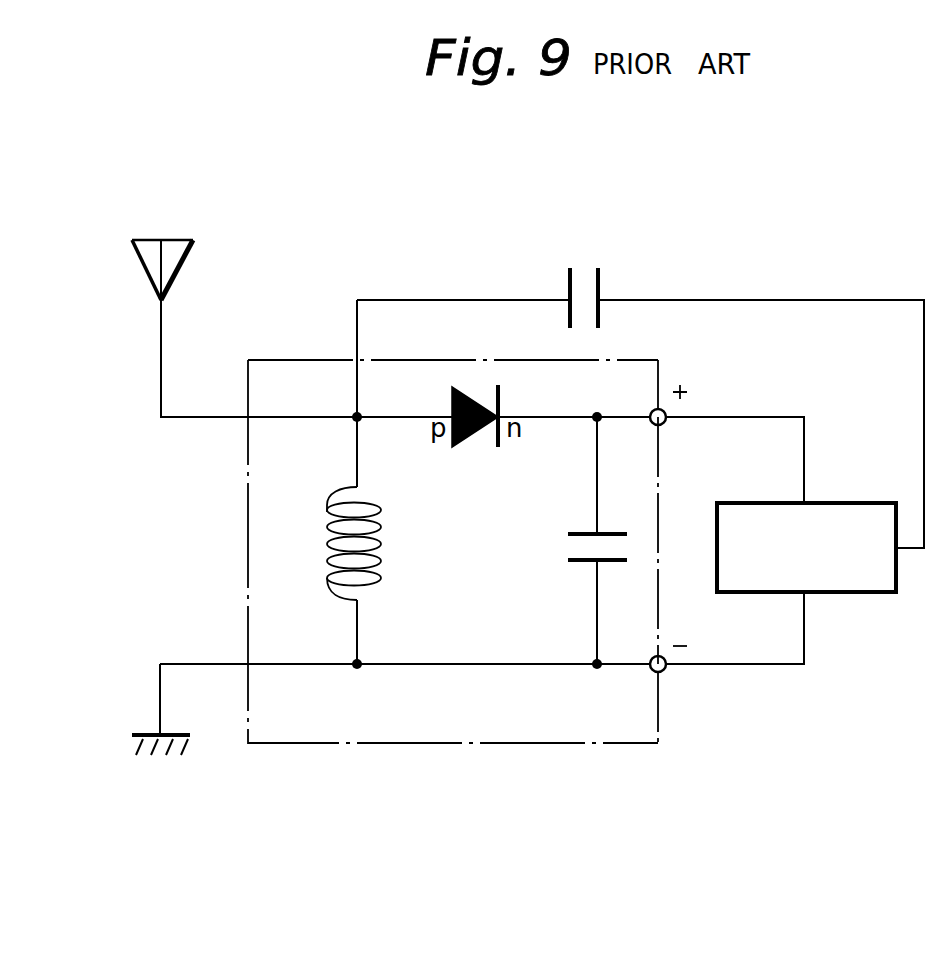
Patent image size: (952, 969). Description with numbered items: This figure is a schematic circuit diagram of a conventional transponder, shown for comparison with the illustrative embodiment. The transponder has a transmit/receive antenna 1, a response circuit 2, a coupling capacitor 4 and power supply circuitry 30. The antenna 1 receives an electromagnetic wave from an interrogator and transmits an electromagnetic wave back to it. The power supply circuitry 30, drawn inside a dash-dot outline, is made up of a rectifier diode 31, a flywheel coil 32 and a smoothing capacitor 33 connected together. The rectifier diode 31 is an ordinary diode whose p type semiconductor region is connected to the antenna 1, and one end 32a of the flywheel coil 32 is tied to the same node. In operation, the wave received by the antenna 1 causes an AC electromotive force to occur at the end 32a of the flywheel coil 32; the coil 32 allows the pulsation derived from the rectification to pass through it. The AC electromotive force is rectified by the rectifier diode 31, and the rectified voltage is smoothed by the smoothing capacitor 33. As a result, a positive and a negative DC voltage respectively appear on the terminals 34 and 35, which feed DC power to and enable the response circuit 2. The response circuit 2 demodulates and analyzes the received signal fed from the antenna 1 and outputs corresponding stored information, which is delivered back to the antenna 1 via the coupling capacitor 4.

The transmit/receive antenna 1 is at (171, 240).
The response circuit 2 is at (893, 594).
The coupling capacitor 4 is at (603, 289).
The power supply circuitry 30 is at (451, 744).
The rectifier diode 31 is at (470, 437).
The flywheel coil 32 is at (381, 565).
The one end of the flywheel coil 32a is at (356, 416).
The smoothing capacitor 33 is at (566, 548).
The positive terminal 34 is at (664, 424).
The negative terminal 35 is at (664, 671).